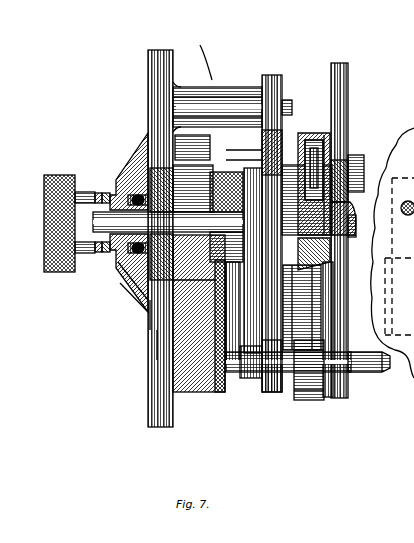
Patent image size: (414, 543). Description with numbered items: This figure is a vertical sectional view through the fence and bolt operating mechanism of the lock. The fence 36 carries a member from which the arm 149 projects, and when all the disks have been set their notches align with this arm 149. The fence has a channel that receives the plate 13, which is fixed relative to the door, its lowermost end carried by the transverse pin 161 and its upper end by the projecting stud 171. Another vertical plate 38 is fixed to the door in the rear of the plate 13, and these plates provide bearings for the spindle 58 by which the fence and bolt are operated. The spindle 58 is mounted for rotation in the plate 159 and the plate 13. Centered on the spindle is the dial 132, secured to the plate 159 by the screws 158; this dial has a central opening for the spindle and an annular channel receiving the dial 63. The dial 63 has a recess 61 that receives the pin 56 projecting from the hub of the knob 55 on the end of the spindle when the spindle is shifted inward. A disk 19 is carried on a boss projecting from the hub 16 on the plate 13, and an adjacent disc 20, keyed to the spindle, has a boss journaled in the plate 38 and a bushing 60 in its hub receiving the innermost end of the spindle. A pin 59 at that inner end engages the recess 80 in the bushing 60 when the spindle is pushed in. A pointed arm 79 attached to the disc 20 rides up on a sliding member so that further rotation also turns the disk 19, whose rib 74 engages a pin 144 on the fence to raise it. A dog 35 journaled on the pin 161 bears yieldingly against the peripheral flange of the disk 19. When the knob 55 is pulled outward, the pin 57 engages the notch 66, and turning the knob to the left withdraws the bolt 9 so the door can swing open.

The bolt 9 is at (192, 325).
The plate 13 is at (268, 392).
The hub 16 is at (172, 170).
The disk 19 is at (303, 132).
The disc 20 is at (326, 135).
The dog 35 is at (315, 400).
The fence 36 is at (248, 198).
The plate 38 is at (348, 76).
The knob 55 is at (67, 274).
The pin 56 is at (92, 188).
The pin 57 is at (200, 160).
The spindle 58 is at (128, 222).
The pin 59 is at (330, 172).
The bushing 60 is at (378, 178).
The recess 61 is at (100, 193).
The dial 63 is at (122, 285).
The notch 66 is at (158, 340).
The rib 74 is at (288, 375).
The pointed arm 79 is at (315, 145).
The recess 80 is at (323, 243).
The dial 132 is at (150, 300).
The pin 144 is at (257, 374).
The arm 149 is at (225, 160).
The screws 158 is at (138, 300).
The plate 159 is at (160, 428).
The transverse pin 161 is at (387, 373).
The projecting stud 171 is at (208, 62).